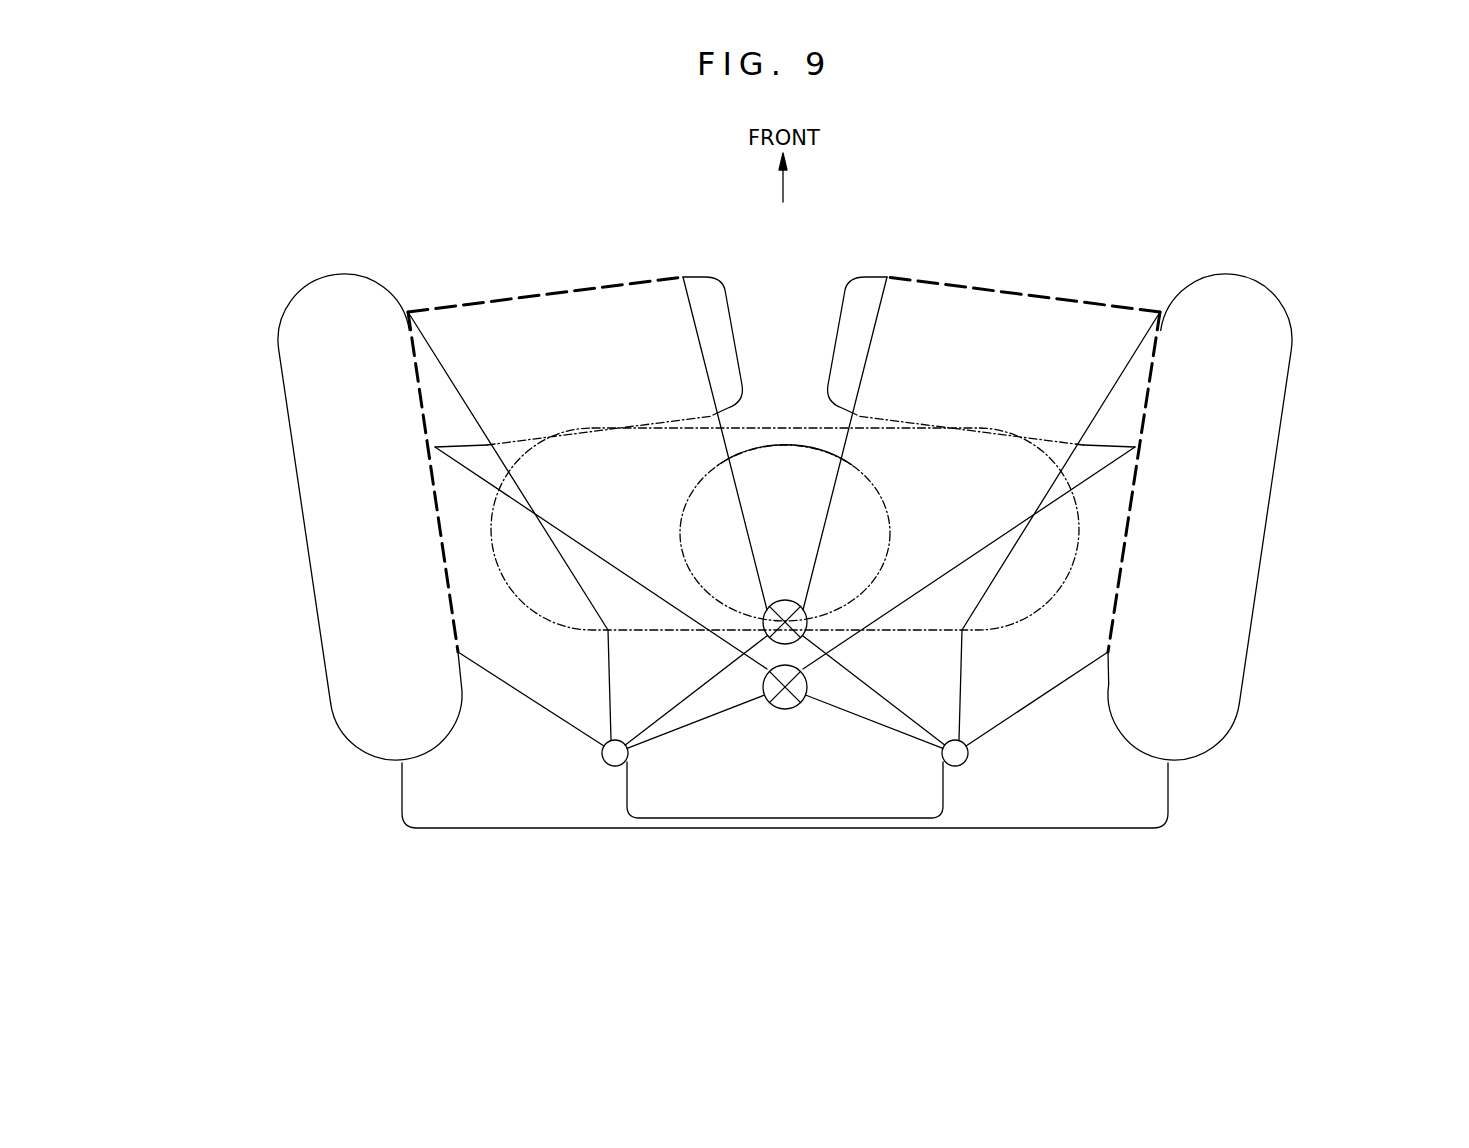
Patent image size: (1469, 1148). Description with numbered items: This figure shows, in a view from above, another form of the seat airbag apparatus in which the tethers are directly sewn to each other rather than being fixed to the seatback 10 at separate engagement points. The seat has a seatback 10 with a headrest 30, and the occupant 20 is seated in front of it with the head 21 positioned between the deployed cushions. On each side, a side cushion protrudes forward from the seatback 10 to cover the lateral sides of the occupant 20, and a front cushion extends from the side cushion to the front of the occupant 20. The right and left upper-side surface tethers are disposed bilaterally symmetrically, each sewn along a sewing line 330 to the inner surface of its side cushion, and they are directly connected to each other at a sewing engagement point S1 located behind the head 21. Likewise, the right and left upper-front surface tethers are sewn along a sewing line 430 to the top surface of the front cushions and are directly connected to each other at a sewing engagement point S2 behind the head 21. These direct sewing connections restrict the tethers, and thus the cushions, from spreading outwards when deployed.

The seatback 10 is at (1053, 785).
The occupant 20 is at (778, 402).
The head 21 is at (793, 517).
The headrest 30 is at (682, 793).
The sewing line 330 is at (447, 538).
The sewing line 430 is at (597, 288).
The sewing engagement point S1 is at (785, 700).
The sewing engagement point S2 is at (763, 622).